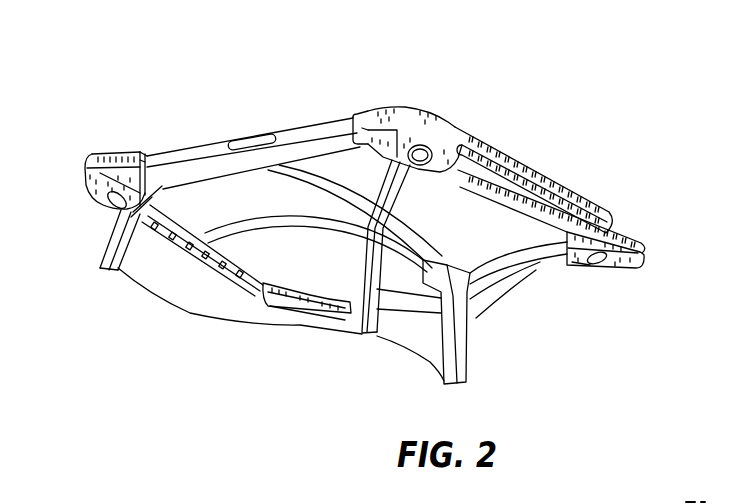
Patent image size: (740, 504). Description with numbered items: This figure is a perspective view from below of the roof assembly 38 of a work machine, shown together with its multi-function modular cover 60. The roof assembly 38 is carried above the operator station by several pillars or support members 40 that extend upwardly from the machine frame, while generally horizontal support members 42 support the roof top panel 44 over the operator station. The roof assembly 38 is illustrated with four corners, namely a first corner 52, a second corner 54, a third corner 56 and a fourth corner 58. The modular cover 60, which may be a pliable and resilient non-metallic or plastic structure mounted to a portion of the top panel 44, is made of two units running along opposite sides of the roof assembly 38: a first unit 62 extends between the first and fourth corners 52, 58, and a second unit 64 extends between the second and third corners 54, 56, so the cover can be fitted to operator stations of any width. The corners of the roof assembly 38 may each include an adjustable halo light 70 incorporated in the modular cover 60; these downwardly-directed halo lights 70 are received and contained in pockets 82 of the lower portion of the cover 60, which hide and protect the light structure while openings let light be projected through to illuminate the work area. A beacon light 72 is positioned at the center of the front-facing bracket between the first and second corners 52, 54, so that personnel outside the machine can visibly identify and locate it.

The roof assembly 38 is at (148, 100).
The pillars or support members 40 is at (110, 241).
The generally horizontal support members 42 is at (264, 233).
The roof top panel 44 is at (229, 211).
The first corner 52 is at (85, 151).
The second corner 54 is at (418, 104).
The third corner 56 is at (739, 125).
The fourth corner 58 is at (287, 316).
The modular cover 60 is at (525, 158).
The first unit 62 is at (193, 250).
The second unit 64 is at (563, 190).
The halo light 70 is at (108, 206).
The beacon light 72 is at (247, 140).
The pocket 82 is at (142, 167).